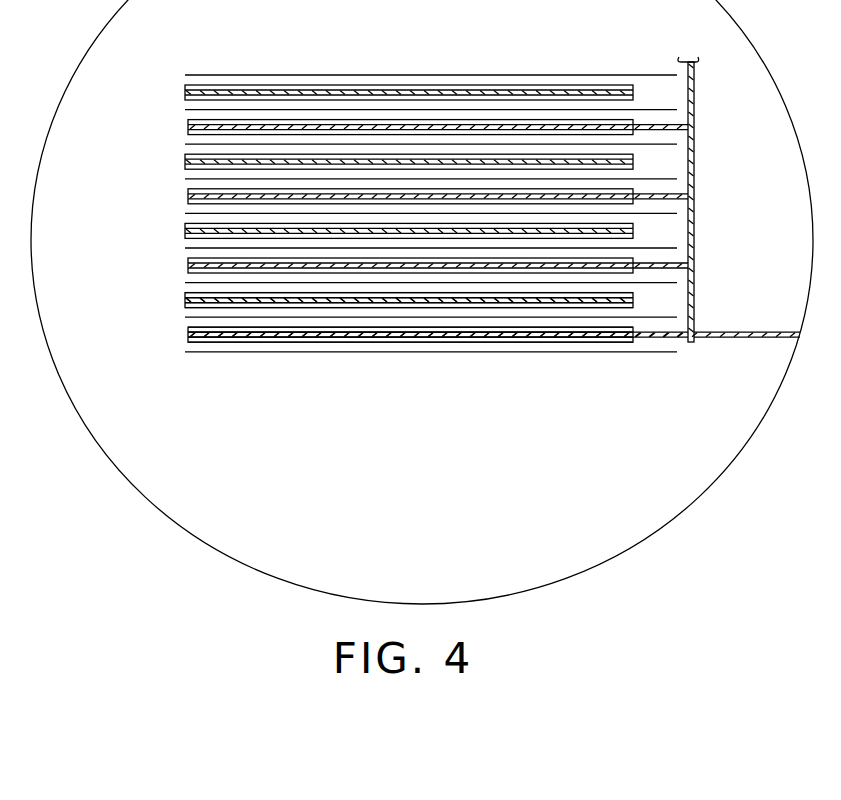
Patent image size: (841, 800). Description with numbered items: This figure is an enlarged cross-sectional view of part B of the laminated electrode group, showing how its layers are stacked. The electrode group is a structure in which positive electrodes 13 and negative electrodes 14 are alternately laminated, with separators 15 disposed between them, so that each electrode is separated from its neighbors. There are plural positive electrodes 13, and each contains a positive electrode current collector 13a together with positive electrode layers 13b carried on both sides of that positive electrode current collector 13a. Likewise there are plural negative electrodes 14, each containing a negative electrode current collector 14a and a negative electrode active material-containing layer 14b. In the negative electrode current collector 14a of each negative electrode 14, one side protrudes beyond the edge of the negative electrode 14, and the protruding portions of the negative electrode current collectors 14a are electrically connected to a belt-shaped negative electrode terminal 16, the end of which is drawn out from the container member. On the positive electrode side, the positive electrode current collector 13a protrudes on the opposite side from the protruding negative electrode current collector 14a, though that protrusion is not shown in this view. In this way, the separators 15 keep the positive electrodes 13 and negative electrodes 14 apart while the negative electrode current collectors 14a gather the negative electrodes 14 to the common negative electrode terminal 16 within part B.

The positive electrode 13 is at (171, 92).
The positive electrode current collector 13a is at (188, 301).
The positive electrode layer 13b is at (187, 295).
The negative electrode 14 is at (171, 127).
The negative electrode current collector 14a is at (665, 125).
The negative electrode active material-containing layer 14b is at (187, 331).
The separator 15 is at (497, 75).
The negative electrode terminal 16 is at (743, 338).
The part B is at (690, 506).